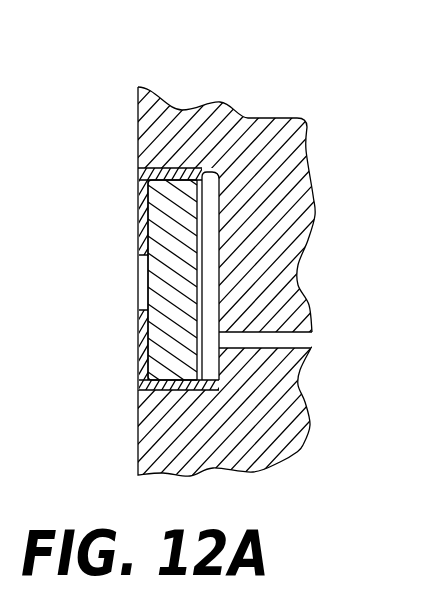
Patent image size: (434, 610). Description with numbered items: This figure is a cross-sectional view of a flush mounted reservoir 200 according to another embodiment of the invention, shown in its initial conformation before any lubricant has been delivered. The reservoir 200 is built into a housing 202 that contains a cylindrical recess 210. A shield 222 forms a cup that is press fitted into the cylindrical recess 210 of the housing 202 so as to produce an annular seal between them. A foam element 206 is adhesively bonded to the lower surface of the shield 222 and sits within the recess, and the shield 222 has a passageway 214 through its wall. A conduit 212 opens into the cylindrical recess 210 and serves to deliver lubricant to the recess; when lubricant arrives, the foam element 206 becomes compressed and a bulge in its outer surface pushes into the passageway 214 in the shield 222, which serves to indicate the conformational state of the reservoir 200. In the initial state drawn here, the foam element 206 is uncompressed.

The reservoir 200 is at (98, 82).
The housing 202 is at (190, 110).
The foam element 206 is at (168, 343).
The cylindrical recess 210 is at (207, 262).
The conduit 212 is at (282, 339).
The passageway 214 is at (147, 304).
The shield 222 is at (147, 222).